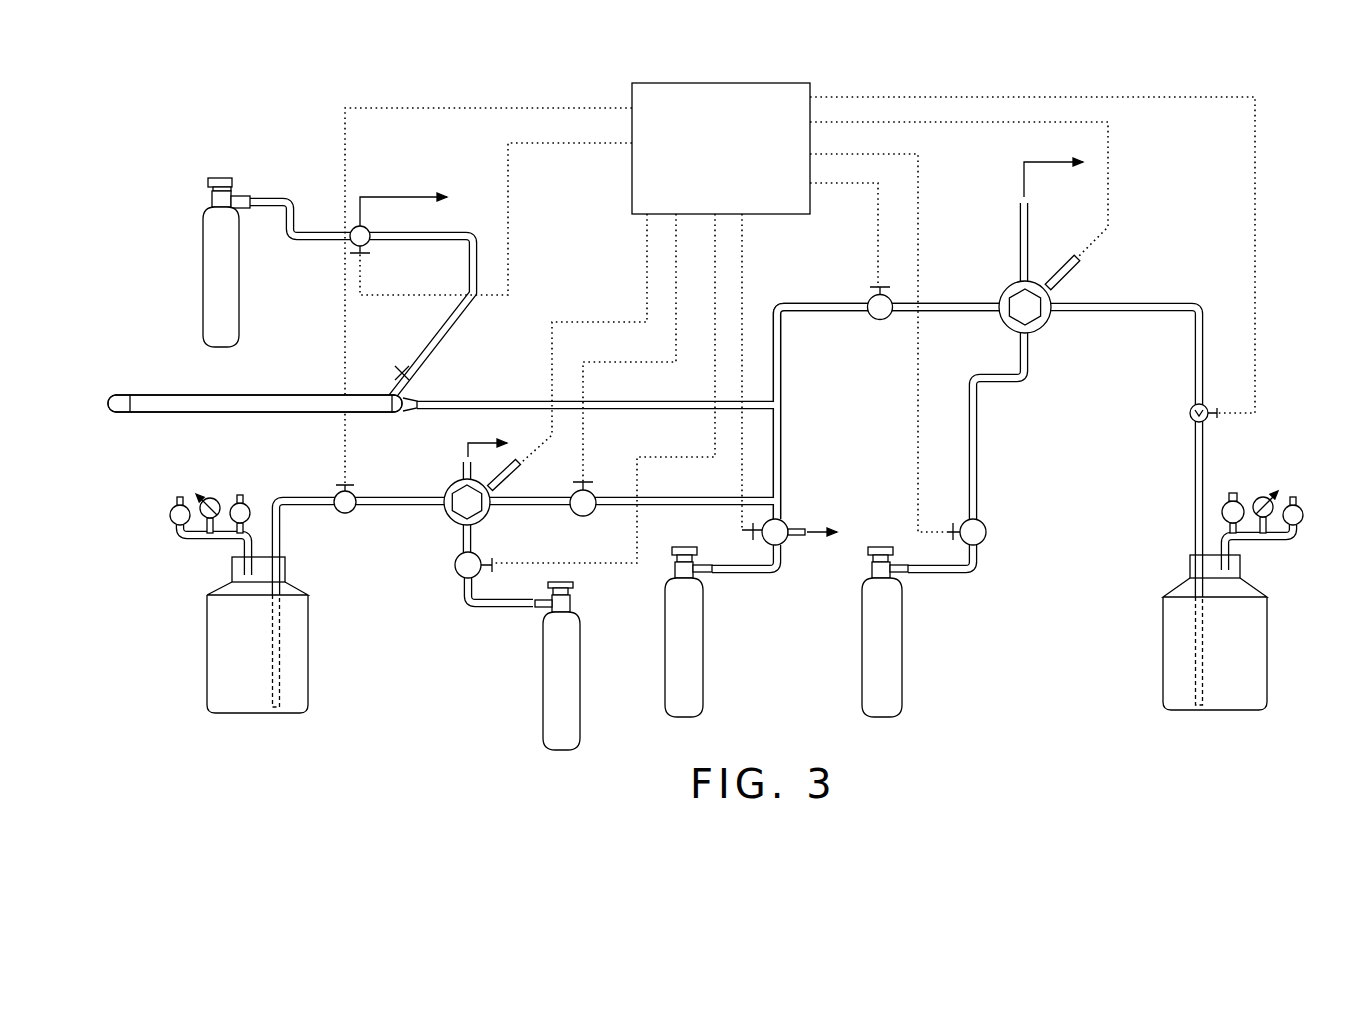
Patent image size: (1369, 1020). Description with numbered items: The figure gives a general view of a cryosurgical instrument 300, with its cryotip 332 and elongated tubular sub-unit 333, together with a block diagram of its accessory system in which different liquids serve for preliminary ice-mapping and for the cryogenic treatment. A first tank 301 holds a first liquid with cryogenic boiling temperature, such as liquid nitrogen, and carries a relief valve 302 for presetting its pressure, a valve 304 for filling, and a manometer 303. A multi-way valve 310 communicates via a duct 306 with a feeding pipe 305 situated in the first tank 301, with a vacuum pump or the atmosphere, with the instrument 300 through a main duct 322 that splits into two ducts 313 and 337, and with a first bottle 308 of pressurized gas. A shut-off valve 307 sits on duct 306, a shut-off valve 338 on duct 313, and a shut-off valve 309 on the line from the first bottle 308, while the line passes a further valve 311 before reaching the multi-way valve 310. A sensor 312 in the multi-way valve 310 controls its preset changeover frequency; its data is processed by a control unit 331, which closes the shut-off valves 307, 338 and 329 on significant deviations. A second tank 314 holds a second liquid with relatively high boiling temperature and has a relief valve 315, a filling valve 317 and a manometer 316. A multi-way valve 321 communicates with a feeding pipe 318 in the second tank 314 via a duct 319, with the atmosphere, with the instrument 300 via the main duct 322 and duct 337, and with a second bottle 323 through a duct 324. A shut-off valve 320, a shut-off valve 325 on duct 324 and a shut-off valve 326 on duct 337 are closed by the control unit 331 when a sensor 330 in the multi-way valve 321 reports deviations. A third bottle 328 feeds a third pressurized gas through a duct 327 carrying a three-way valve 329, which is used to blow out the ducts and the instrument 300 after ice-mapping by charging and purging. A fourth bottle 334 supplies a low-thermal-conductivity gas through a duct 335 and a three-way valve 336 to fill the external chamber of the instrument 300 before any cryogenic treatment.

The cryosurgical instrument 300 is at (249, 385).
The first tank 301 is at (1267, 677).
The relief valve 302 is at (1222, 505).
The manometer 303 is at (1258, 497).
The valve 304 is at (1305, 513).
The feeding pipe 305 is at (1195, 663).
The duct 306 is at (1202, 347).
The shut-off valve 307 is at (1195, 418).
The first bottle 308 is at (862, 673).
The shut-off valve 309 is at (942, 577).
The multi-way valve 310 is at (1052, 318).
The valve 311 is at (985, 553).
The sensor 312 is at (1050, 290).
The duct 313 is at (822, 353).
The second tank 314 is at (205, 677).
The relief valve 315 is at (175, 528).
The manometer 316 is at (222, 517).
The valve 317 is at (250, 510).
The feeding pipe 318 is at (307, 675).
The duct 319 is at (307, 497).
The shut-off valve 320 is at (338, 510).
The multi-way valve 321 is at (448, 485).
The main duct 322 is at (455, 400).
The second bottle 323 is at (543, 723).
The duct 324 is at (515, 610).
The shut-off valve 325 is at (455, 577).
The shut-off valve 326 is at (598, 497).
The duct 327 is at (762, 575).
The third bottle 328 is at (703, 680).
The three-way valve 329 is at (788, 525).
The sensor 330 is at (507, 485).
The control unit 331 is at (632, 203).
The cryotip 332 is at (108, 400).
The elongated tubular sub-unit 333 is at (343, 393).
The fourth bottle 334 is at (203, 273).
The duct 335 is at (477, 272).
The three-way valve 336 is at (352, 230).
The duct 337 is at (780, 470).
The shut-off valve 338 is at (868, 300).